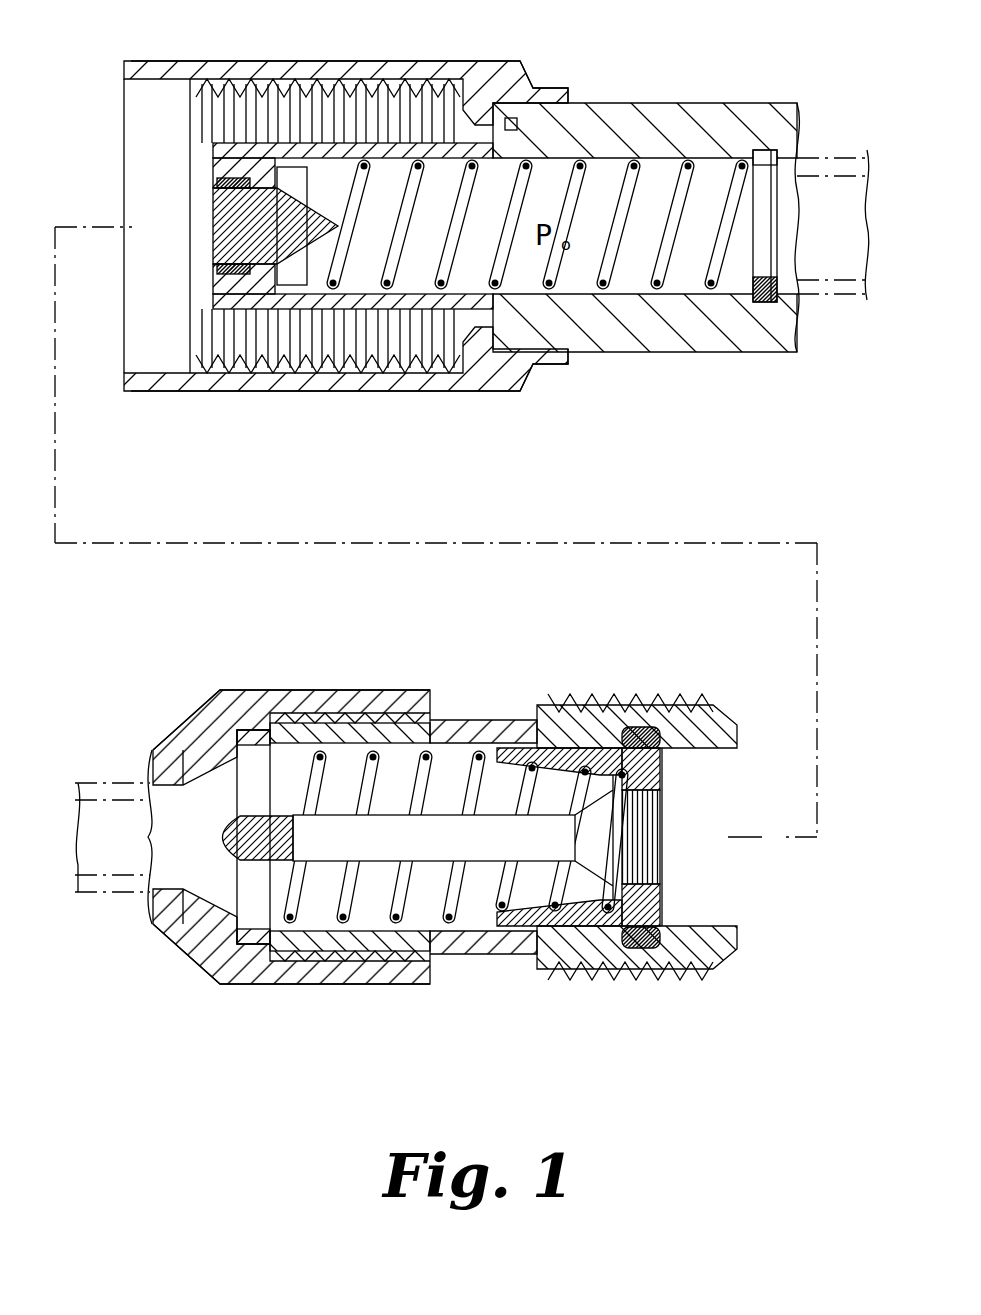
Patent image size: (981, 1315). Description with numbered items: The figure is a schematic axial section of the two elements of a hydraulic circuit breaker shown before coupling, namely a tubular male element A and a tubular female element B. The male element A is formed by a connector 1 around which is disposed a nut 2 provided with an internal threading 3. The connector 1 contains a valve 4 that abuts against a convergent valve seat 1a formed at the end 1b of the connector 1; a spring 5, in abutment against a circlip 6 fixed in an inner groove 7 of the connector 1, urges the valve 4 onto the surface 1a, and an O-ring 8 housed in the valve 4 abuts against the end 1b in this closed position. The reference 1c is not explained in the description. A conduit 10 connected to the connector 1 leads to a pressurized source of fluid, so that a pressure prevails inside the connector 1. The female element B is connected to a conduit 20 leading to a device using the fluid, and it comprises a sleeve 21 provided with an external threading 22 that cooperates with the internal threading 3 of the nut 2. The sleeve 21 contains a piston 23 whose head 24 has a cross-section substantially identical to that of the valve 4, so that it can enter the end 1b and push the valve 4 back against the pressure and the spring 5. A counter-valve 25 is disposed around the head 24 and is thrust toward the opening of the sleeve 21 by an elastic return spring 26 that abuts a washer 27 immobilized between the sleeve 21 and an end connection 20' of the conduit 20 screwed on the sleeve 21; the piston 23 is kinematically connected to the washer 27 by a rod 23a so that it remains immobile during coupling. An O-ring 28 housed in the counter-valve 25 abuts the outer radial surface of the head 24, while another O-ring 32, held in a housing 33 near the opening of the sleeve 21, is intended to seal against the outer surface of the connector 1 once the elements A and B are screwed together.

The connector 1 is at (685, 330).
The valve seat 1a is at (290, 300).
The end of the connector 1b is at (237, 303).
The valve seat 1c is at (440, 285).
The nut 2 is at (258, 72).
The internal threading 3 is at (435, 108).
The valve 4 is at (433, 268).
The spring 5 is at (670, 250).
The circlip 6 is at (752, 302).
The inner groove 7 is at (767, 142).
The O-ring 8 is at (238, 182).
The conduit 10 is at (822, 302).
The conduit 20 is at (89, 787).
The end connection 20' is at (204, 929).
The sleeve 21 is at (467, 955).
The external threading 22 is at (668, 702).
The piston 23 is at (452, 796).
The rod 23a is at (373, 858).
The head of the piston 24 is at (652, 860).
The counter-valve 25 is at (632, 946).
The elastic return spring 26 is at (297, 905).
The washer 27 is at (246, 738).
The O-ring 28 is at (636, 726).
The O-ring 32 is at (663, 740).
The housing 33 is at (648, 953).
The male element A is at (706, 96).
The female element B is at (152, 1003).